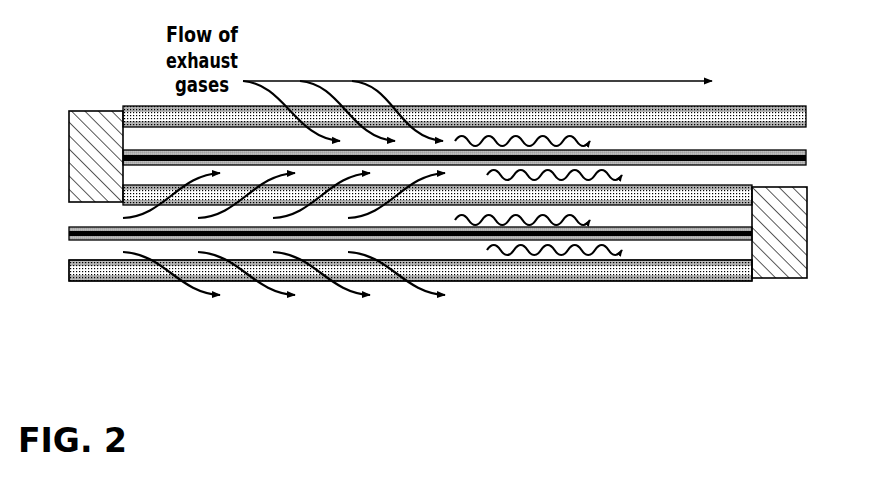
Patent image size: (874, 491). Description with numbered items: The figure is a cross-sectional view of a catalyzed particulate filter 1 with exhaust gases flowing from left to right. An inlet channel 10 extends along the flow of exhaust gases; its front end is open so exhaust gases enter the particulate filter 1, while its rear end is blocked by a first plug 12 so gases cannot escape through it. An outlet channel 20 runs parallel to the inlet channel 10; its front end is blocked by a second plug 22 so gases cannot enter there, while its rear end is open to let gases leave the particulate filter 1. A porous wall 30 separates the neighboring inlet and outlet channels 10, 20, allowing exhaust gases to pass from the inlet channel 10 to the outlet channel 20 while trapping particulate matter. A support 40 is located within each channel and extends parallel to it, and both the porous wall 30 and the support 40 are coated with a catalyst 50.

The particulate filter 1 is at (475, 312).
The inlet channel 10 is at (88, 252).
The first plug 12 is at (782, 267).
The outlet channel 20 is at (793, 139).
The second plug 22 is at (91, 118).
The porous wall 30 is at (119, 270).
The support 40 is at (793, 162).
The catalyst 50 is at (730, 152).